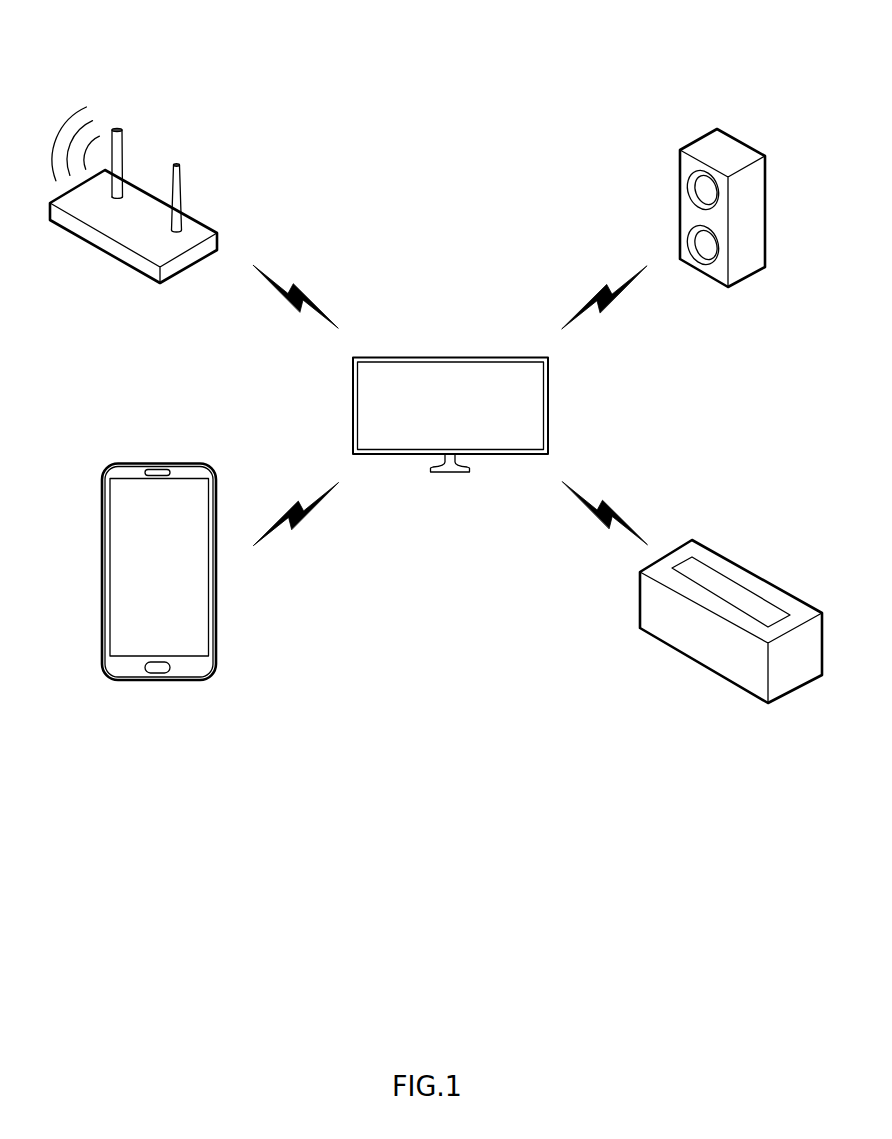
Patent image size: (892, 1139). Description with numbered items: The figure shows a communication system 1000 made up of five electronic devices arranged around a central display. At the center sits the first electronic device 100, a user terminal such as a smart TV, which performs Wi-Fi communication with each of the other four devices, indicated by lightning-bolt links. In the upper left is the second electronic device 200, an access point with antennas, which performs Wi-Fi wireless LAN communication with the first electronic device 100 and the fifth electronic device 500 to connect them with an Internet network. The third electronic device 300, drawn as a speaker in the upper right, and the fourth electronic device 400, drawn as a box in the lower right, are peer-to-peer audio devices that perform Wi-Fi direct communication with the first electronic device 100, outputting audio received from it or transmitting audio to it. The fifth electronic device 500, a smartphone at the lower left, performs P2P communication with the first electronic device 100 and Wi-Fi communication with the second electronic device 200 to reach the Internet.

The communication system 1000 is at (353, 33).
The first electronic device 100 is at (448, 357).
The second electronic device 200 is at (202, 223).
The third electronic device 300 is at (695, 137).
The fourth electronic device 400 is at (753, 572).
The fifth electronic device 500 is at (157, 463).